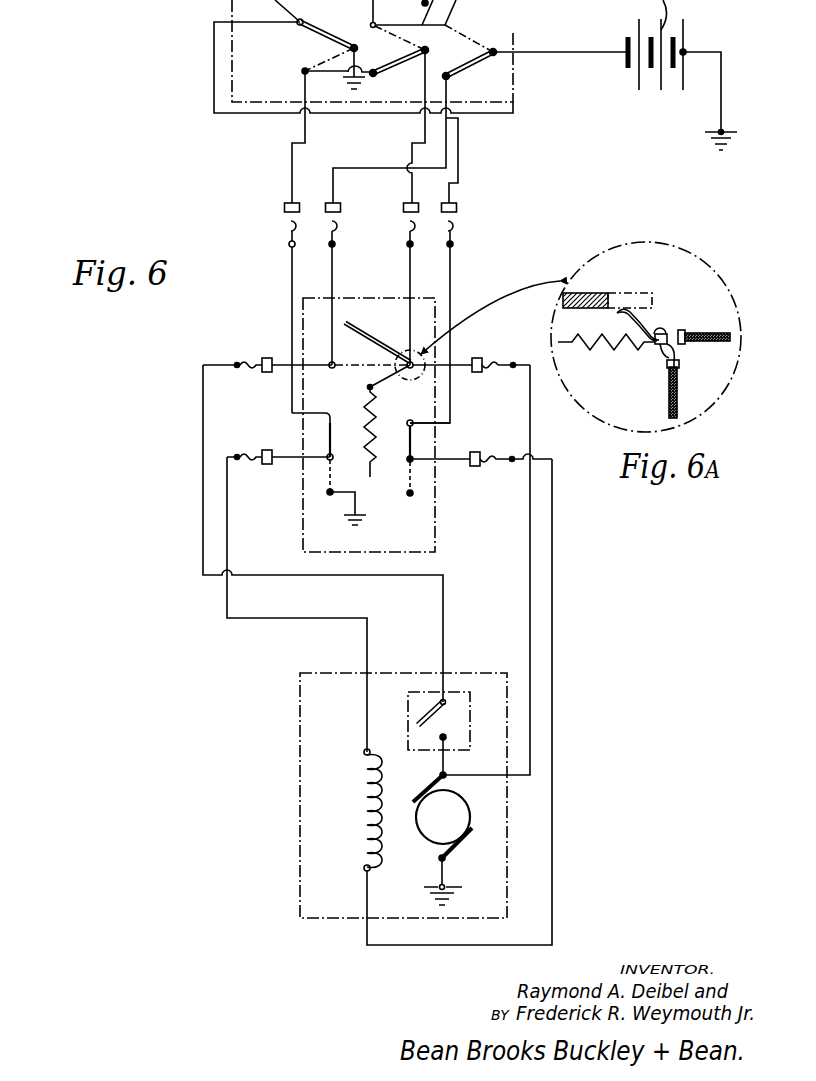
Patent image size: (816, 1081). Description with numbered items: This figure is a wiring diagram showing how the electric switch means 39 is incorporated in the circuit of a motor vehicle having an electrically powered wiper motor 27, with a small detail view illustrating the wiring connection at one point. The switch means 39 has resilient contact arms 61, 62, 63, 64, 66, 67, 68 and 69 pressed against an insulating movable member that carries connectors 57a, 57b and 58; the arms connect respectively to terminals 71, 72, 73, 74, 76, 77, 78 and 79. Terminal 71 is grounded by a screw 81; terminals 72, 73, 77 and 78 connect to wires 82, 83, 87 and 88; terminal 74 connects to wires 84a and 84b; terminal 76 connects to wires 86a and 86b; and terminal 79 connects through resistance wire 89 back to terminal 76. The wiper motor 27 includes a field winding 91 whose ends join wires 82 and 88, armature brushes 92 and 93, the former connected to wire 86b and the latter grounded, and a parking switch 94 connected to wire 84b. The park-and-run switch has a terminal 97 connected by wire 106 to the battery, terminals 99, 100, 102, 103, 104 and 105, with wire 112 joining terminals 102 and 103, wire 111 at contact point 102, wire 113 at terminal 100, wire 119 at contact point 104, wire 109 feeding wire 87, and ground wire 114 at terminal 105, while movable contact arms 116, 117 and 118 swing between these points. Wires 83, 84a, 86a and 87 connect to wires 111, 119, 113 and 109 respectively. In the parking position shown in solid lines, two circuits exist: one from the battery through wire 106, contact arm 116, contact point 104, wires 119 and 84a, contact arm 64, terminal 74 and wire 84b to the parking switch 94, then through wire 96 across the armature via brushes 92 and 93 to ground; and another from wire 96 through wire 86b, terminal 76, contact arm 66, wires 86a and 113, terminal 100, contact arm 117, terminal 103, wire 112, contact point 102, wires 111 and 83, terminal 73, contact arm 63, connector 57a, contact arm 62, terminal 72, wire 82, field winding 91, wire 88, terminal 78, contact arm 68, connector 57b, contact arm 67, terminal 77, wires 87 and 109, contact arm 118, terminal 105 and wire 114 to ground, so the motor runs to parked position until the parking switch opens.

In FIG. 6, the wiper motor 27 is at (300, 883).
In FIG. 6, the switch means 39 is at (317, 558).
In FIG. 6, the connector 57a is at (333, 440).
In FIG. 6, the connector 57b is at (408, 453).
In FIG. 6, the connector 58 is at (396, 345).
In FIG. 6A, the connector 58 is at (586, 292).
In FIG. 6, the contact arm 61 is at (328, 494).
In FIG. 6, the contact arm 62 is at (320, 453).
In FIG. 6, the contact arm 63 is at (292, 414).
In FIG. 6, the contact arm 64 is at (329, 362).
In FIG. 6, the contact arm 66 is at (430, 362).
In FIG. 6A, the contact arm 66 is at (641, 326).
In FIG. 6, the contact arm 67 is at (430, 455).
In FIG. 6, the contact arm 68 is at (415, 463).
In FIG. 6, the contact arm 69 is at (414, 496).
In FIG. 6, the terminal 71 is at (328, 492).
In FIG. 6, the terminal 72 is at (295, 462).
In FIG. 6, the terminal 73 is at (328, 425).
In FIG. 6, the terminal 74 is at (289, 368).
In FIG. 6, the terminal 76 is at (462, 365).
In FIG. 6A, the terminal 76 is at (677, 358).
In FIG. 6, the terminal 77 is at (433, 423).
In FIG. 6, the terminal 78 is at (452, 462).
In FIG. 6, the terminal 79 is at (370, 477).
In FIG. 6, the screw 81 is at (352, 497).
In FIG. 6, the wire 82 is at (227, 468).
In FIG. 6, the wire 83 is at (289, 257).
In FIG. 6, the wire 84a is at (331, 267).
In FIG. 6, the wire 84b is at (203, 382).
In FIG. 6, the wire 86a is at (409, 266).
In FIG. 6A, the wire 86a is at (703, 333).
In FIG. 6, the wire 86b is at (530, 590).
In FIG. 6A, the wire 86b is at (672, 402).
In FIG. 6, the wire 87 is at (452, 268).
In FIG. 6, the wire 88 is at (553, 496).
In FIG. 6, the resistance wire 89 is at (373, 405).
In FIG. 6A, the resistance wire 89 is at (614, 351).
In FIG. 6, the field winding 91 is at (354, 794).
In FIG. 6, the armature brush 92 is at (448, 787).
In FIG. 6, the armature brush 93 is at (460, 850).
In FIG. 6, the parking switch 94 is at (480, 718).
In FIG. 6, the wire 96 is at (445, 762).
In FIG. 6, the terminal 97 is at (494, 50).
In FIG. 6, the terminal 99 is at (401, 14).
In FIG. 6, the terminal 100 is at (428, 50).
In FIG. 6, the contact point 102 is at (303, 72).
In FIG. 6, the terminal 103 is at (374, 80).
In FIG. 6, the contact point 104 is at (449, 80).
In FIG. 6, the terminal 105 is at (357, 49).
In FIG. 6, the wire 106 is at (577, 53).
In FIG. 6, the wire 109 is at (459, 167).
In FIG. 6, the wire 111 is at (302, 125).
In FIG. 6, the wire 112 is at (327, 75).
In FIG. 6, the wire 113 is at (423, 128).
In FIG. 6, the ground wire 114 is at (360, 74).
In FIG. 6, the contact arm 116 is at (471, 64).
In FIG. 6, the contact arm 117 is at (401, 63).
In FIG. 6, the contact arm 118 is at (318, 31).
In FIG. 6, the wire 119 is at (447, 143).